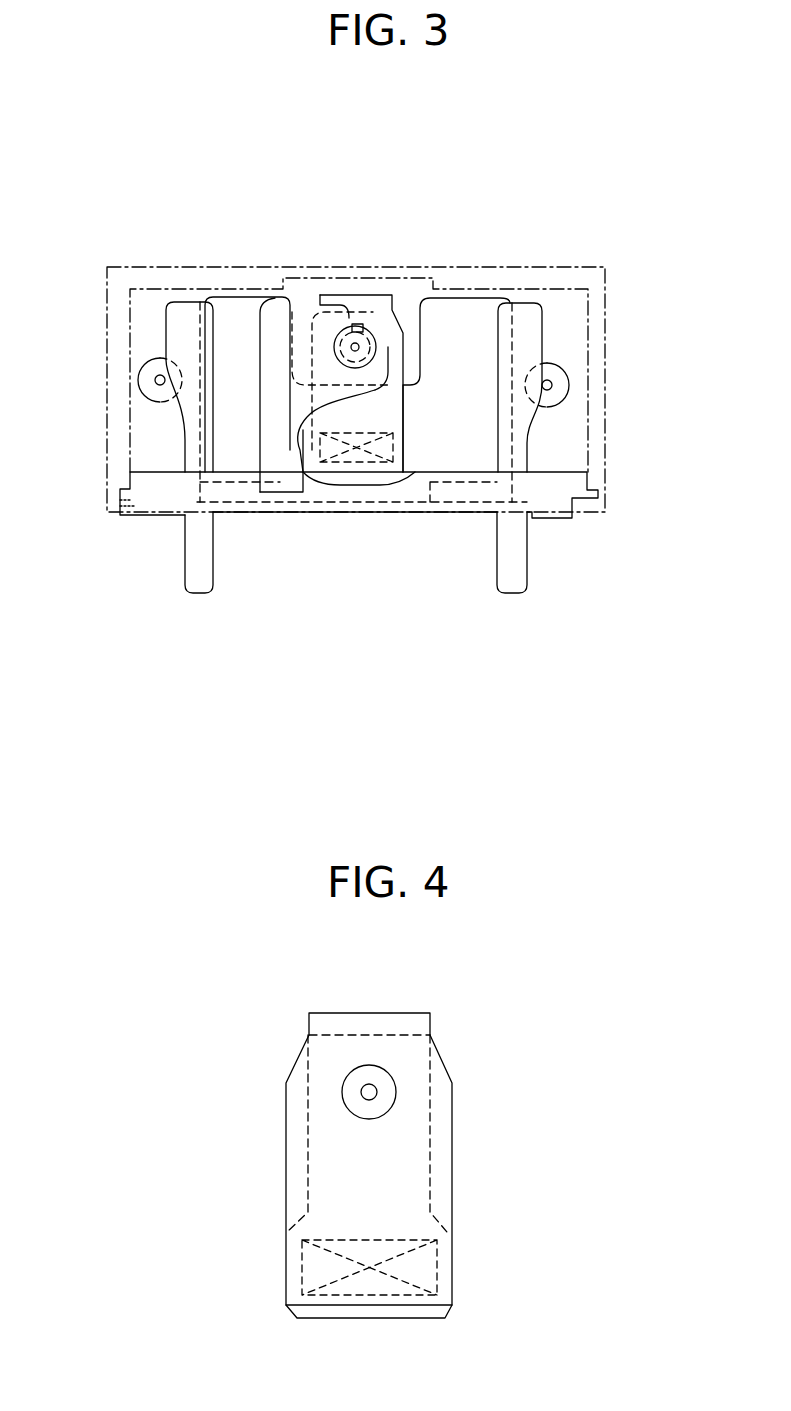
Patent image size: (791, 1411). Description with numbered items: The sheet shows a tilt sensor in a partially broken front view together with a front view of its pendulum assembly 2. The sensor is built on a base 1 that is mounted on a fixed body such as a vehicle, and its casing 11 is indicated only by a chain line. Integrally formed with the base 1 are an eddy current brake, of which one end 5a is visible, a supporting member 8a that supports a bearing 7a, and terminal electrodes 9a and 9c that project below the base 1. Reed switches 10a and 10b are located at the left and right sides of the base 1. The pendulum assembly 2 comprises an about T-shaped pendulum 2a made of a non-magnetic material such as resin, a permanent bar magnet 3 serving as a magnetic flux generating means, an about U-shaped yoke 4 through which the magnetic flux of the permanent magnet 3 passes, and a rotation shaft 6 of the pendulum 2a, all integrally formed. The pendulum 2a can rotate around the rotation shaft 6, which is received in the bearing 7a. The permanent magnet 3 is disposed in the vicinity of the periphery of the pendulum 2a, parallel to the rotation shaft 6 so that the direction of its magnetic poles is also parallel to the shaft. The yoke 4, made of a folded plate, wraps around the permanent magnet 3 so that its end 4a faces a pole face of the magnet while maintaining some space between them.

In FIG. 3, the base 1 is at (550, 495).
In FIG. 4, the pendulum assembly 2 is at (463, 1062).
In FIG. 4, the pendulum 2a is at (405, 1182).
In FIG. 3, the permanent bar magnet 3 is at (330, 458).
In FIG. 4, the yoke 4 is at (313, 1023).
In FIG. 3, the end of the yoke 4a is at (372, 417).
In FIG. 4, the end of the yoke 4a is at (443, 1270).
In FIG. 3, the end of the eddy current brake 5a is at (478, 320).
In FIG. 3, the rotation shaft 6 is at (356, 340).
In FIG. 4, the rotation shaft 6 is at (367, 1093).
In FIG. 3, the bearing 7a is at (375, 325).
In FIG. 3, the supporting member 8a is at (275, 330).
In FIG. 3, the terminal electrode 9a is at (195, 562).
In FIG. 3, the terminal electrode 9c is at (517, 568).
In FIG. 3, the reed switch 10a is at (145, 373).
In FIG. 3, the reed switch 10b is at (565, 374).
In FIG. 3, the casing 11 is at (572, 277).